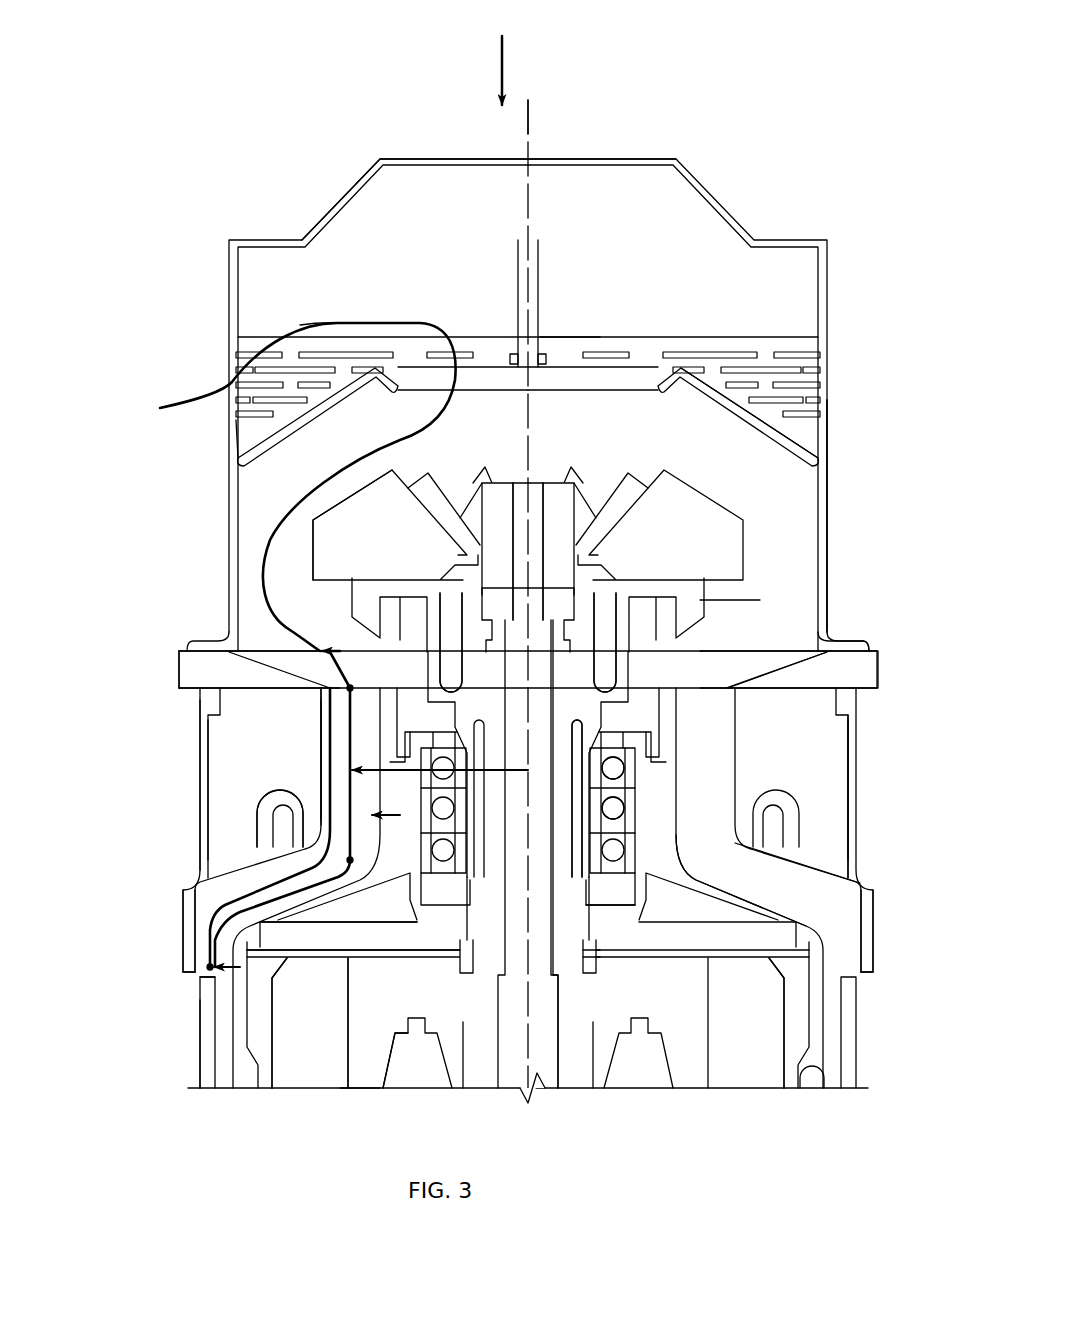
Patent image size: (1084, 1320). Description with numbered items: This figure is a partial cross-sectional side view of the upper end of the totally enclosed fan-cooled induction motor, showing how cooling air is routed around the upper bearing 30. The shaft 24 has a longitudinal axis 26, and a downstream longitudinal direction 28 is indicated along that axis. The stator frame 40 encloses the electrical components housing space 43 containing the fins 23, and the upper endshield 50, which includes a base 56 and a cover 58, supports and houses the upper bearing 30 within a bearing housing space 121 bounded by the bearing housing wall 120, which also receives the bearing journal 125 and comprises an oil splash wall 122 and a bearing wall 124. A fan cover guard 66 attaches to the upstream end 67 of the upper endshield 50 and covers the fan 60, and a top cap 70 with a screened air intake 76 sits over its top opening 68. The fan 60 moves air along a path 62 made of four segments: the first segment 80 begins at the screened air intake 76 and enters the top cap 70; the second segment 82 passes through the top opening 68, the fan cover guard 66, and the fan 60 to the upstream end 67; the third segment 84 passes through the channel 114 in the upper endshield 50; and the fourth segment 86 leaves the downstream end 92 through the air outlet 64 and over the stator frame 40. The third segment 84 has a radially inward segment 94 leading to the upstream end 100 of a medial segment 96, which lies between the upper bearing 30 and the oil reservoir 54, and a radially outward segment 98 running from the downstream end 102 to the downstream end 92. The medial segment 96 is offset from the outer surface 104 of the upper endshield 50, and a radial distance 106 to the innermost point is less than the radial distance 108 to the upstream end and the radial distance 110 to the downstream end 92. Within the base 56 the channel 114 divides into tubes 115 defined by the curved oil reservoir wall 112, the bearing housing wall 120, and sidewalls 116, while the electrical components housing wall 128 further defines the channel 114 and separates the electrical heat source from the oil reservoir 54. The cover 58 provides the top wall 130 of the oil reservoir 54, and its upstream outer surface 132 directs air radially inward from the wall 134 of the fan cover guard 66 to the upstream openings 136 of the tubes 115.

The fins 23 is at (773, 1007).
The shaft 24 is at (560, 1015).
The longitudinal axis 26 is at (532, 122).
The downstream longitudinal direction 28 is at (500, 68).
The upper bearing 30 is at (480, 800).
The stator frame 40 is at (883, 1042).
The electrical components housing space 43 is at (363, 1077).
The upper endshield 50 is at (100, 742).
The oil reservoir 54 is at (213, 808).
The base 56 is at (173, 846).
The cover 58 is at (880, 640).
The fan 60 is at (755, 450).
The path 62 is at (182, 392).
The air outlet 64 is at (175, 980).
The fan cover guard 66 is at (840, 503).
The upstream end 67 is at (760, 632).
The top opening 68 is at (598, 328).
The top cap 70 is at (318, 210).
The screened air intake 76 is at (203, 422).
The first segment 80 is at (343, 323).
The second segment 82 is at (270, 517).
The third segment 84 is at (337, 738).
The fourth segment 86 is at (213, 1050).
The downstream end 92 is at (200, 977).
The radially inward segment 94 is at (347, 657).
The medial segment 96 is at (395, 757).
The radially outward segment 98 is at (262, 968).
The upstream end 100 is at (340, 683).
The downstream end 102 is at (367, 925).
The outer surface 104 is at (197, 778).
The radial distance 106 is at (513, 770).
The radial distance 108 is at (448, 665).
The radial distance 110 is at (397, 1033).
The oil reservoir wall 112 is at (873, 727).
The channel 114 is at (708, 724).
The tubes 115 is at (200, 903).
The sidewalls 116 is at (340, 703).
The bearing housing wall 120 is at (732, 798).
The bearing housing space 121 is at (440, 917).
The oil splash wall 122 is at (697, 675).
The bearing wall 124 is at (707, 860).
The bearing journal 125 is at (618, 907).
The electrical components housing wall 128 is at (750, 900).
The top wall 130 is at (817, 687).
The upstream outer surface 132 is at (768, 670).
The wall 134 is at (858, 450).
The upstream openings 136 is at (667, 715).